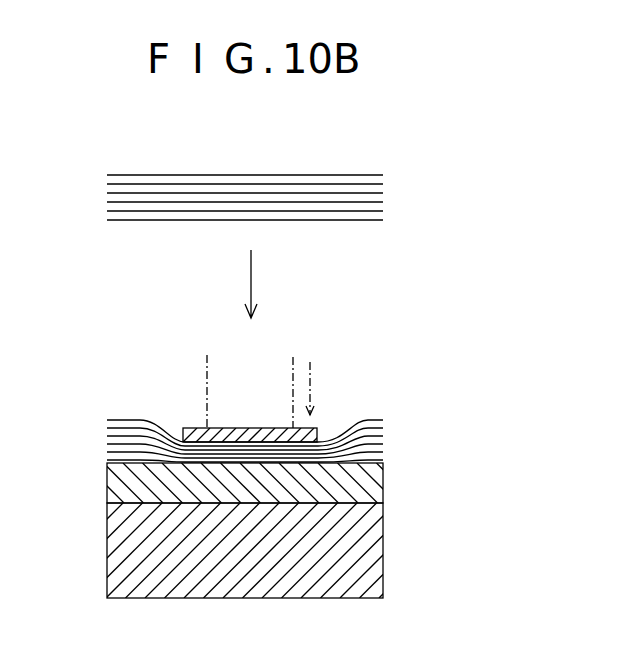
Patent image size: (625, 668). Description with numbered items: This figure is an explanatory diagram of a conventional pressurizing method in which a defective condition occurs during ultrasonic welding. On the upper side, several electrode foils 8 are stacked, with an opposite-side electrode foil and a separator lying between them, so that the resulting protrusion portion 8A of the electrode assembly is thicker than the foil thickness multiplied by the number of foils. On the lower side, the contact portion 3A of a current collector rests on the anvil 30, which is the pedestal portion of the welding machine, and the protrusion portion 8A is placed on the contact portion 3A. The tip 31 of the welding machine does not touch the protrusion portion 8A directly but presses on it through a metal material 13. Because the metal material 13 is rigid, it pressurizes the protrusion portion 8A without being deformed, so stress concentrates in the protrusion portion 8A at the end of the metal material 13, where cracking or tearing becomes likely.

The electrode foil 8 is at (268, 288).
The protrusion portion 8A is at (337, 194).
The metal material 13 is at (243, 428).
The tip 31 is at (213, 384).
The contact portion 3A is at (358, 503).
The anvil 30 is at (137, 597).